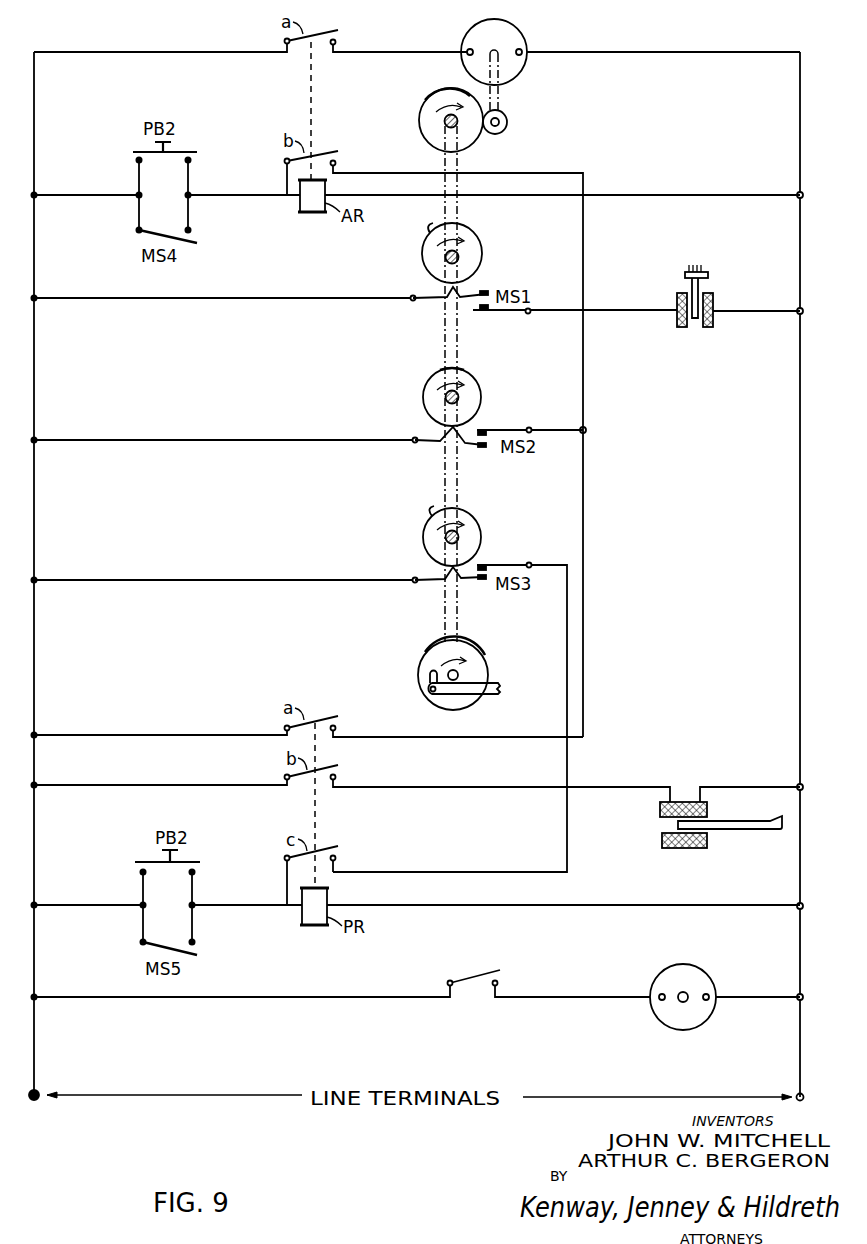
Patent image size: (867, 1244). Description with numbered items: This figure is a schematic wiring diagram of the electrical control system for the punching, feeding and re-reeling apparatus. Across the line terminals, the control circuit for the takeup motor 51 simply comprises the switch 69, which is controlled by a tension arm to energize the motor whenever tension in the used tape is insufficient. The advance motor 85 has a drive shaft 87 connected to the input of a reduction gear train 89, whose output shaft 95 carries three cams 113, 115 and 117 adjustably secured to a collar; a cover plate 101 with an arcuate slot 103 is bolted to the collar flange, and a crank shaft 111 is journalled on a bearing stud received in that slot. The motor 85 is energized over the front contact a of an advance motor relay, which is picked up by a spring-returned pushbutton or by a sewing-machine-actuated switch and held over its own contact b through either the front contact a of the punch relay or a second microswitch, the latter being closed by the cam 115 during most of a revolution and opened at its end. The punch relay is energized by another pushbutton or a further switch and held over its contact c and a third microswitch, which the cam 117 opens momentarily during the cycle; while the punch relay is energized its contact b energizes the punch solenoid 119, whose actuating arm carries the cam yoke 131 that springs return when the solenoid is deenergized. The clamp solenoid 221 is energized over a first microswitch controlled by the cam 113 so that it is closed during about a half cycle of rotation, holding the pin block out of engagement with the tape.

The electric motor 85 is at (522, 35).
The drive shaft 87 is at (500, 102).
The reduction gear train 89 is at (496, 149).
The output shaft 95 is at (443, 165).
The cam 113 is at (493, 237).
The cam 115 is at (482, 390).
The cam 117 is at (482, 525).
The cover plate 101 is at (487, 658).
The arcuate slot 103 is at (428, 678).
The crank shaft 111 is at (490, 698).
The clamp solenoid 221 is at (722, 292).
The punch solenoid 119 is at (650, 815).
The cam yoke 131 is at (735, 798).
The switch 69 is at (487, 972).
The takeup motor 51 is at (710, 975).